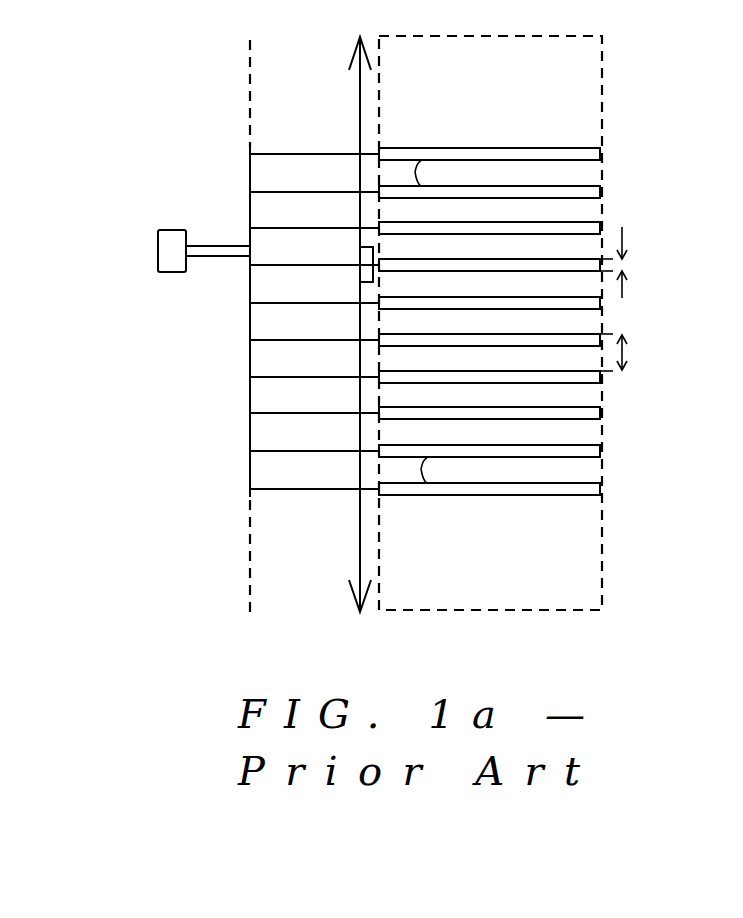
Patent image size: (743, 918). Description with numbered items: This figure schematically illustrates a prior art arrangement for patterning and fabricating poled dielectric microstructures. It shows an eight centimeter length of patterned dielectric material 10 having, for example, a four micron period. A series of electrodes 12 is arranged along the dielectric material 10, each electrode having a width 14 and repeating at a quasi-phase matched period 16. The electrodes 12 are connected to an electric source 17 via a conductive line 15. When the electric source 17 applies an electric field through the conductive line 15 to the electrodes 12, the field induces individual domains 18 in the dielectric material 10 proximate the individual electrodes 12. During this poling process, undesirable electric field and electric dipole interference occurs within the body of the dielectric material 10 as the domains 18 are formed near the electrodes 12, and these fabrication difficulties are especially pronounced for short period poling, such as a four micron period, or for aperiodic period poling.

The patterned dielectric material 10 is at (588, 547).
The electrodes 12 is at (601, 158).
The width 14 is at (628, 266).
The conductive line 15 is at (250, 395).
The quasi-phase matched (QPM) period 16 is at (626, 353).
The electric source 17 is at (174, 230).
The domains 18 is at (415, 172).